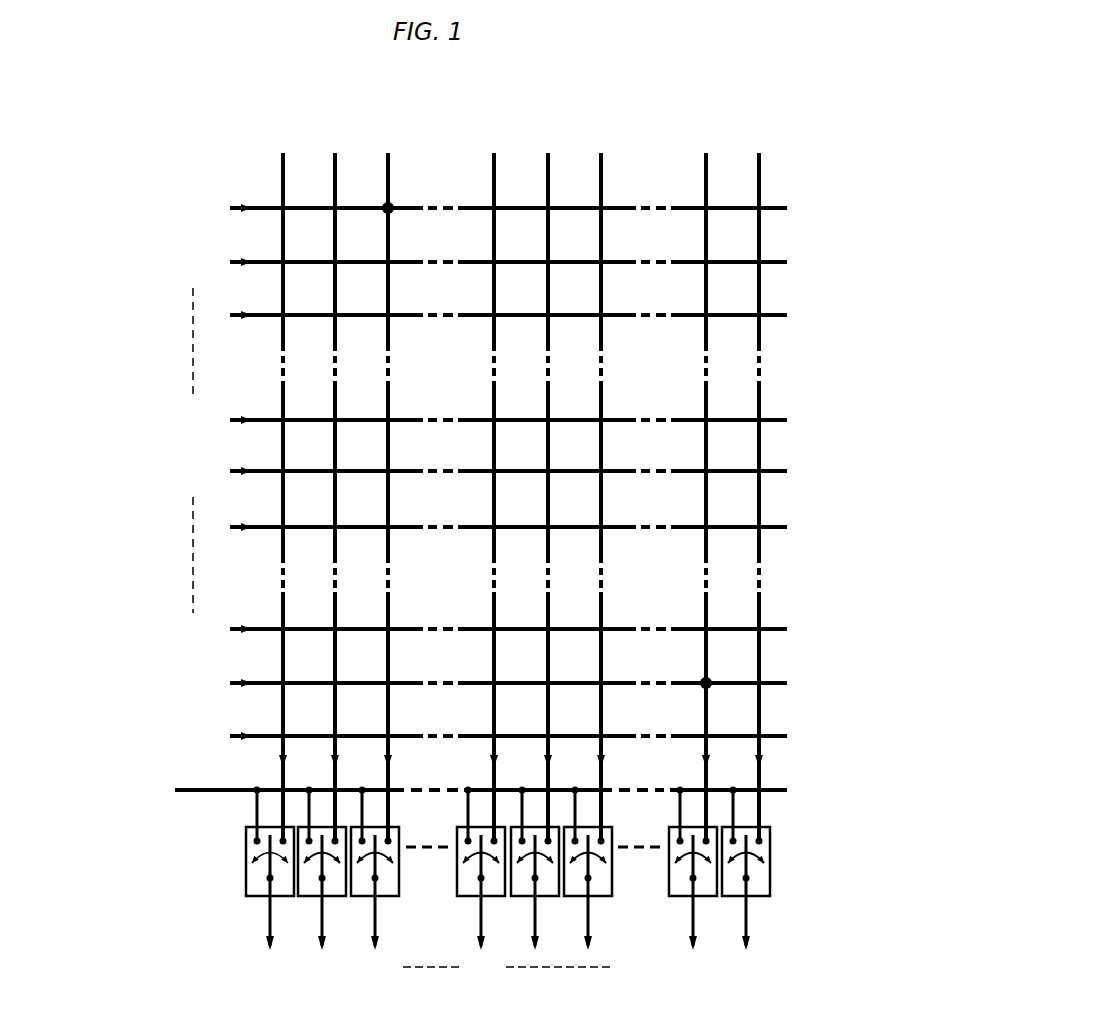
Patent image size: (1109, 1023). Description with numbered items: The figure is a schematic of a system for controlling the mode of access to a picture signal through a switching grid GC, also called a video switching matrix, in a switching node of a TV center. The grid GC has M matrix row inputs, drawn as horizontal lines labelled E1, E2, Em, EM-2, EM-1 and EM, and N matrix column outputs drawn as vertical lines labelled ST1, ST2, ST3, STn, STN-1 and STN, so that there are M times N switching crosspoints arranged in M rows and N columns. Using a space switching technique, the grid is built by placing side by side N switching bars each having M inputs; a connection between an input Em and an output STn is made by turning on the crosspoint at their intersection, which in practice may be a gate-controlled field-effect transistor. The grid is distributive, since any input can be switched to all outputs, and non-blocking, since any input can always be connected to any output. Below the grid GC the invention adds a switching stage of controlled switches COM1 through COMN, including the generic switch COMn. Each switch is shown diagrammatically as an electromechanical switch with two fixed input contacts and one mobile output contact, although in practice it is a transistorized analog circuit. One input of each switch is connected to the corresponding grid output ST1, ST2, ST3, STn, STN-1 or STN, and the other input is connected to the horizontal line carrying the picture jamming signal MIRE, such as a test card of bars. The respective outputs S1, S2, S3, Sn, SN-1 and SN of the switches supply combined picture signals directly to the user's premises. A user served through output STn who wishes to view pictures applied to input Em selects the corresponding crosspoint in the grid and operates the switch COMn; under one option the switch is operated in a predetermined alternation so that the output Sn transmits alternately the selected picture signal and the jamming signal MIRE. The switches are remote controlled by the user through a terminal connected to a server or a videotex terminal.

The switching grid GC is at (824, 251).
The matrix row input E1 is at (487, 200).
The matrix row input E2 is at (487, 254).
The matrix row input Em is at (484, 464).
The matrix row input EM-2 is at (469, 622).
The matrix row input EM-1 is at (471, 676).
The matrix row input EM is at (483, 729).
The matrix column output ST1 is at (287, 803).
The matrix column output ST2 is at (338, 803).
The matrix column output ST3 is at (392, 803).
The matrix column output STn is at (550, 806).
The matrix column output STN-1 is at (708, 803).
The matrix column output STN is at (761, 818).
The picture jamming signal MIRE is at (218, 787).
The switch COM1 is at (256, 878).
The switch COMn is at (463, 896).
The switch COMN is at (771, 887).
The switch output S1 is at (266, 910).
The switch output S2 is at (321, 910).
The switch output S3 is at (378, 910).
The switch output Sn is at (483, 910).
The switch output SN-1 is at (676, 910).
The switch output SN is at (757, 910).